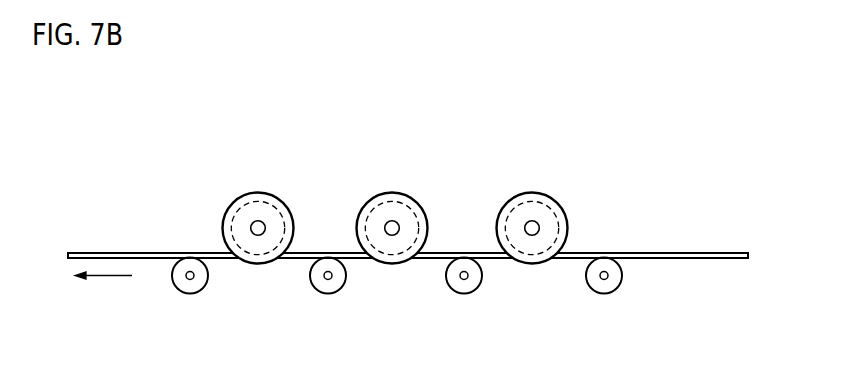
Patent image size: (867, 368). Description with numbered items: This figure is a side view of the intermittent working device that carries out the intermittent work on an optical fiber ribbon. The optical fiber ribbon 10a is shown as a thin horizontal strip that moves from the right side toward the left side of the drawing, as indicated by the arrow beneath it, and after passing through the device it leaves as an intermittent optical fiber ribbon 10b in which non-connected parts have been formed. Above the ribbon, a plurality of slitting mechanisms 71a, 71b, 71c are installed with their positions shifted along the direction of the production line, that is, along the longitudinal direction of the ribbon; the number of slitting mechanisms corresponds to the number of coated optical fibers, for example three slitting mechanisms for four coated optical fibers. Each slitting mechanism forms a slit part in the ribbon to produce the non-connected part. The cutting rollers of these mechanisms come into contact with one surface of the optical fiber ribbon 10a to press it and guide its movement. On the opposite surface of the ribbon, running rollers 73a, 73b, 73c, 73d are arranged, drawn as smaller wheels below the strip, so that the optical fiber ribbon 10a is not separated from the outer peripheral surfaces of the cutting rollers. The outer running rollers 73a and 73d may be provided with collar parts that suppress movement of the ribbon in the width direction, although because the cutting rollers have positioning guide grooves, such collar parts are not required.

The optical fiber ribbon 10a is at (676, 259).
The intermittent optical fiber ribbon 10b is at (118, 253).
The slitting mechanism 71a is at (512, 199).
The slitting mechanism 71b is at (372, 199).
The slitting mechanism 71c is at (240, 198).
The running roller 73a is at (611, 290).
The running roller 73b is at (474, 290).
The running roller 73c is at (338, 290).
The running roller 73d is at (199, 291).